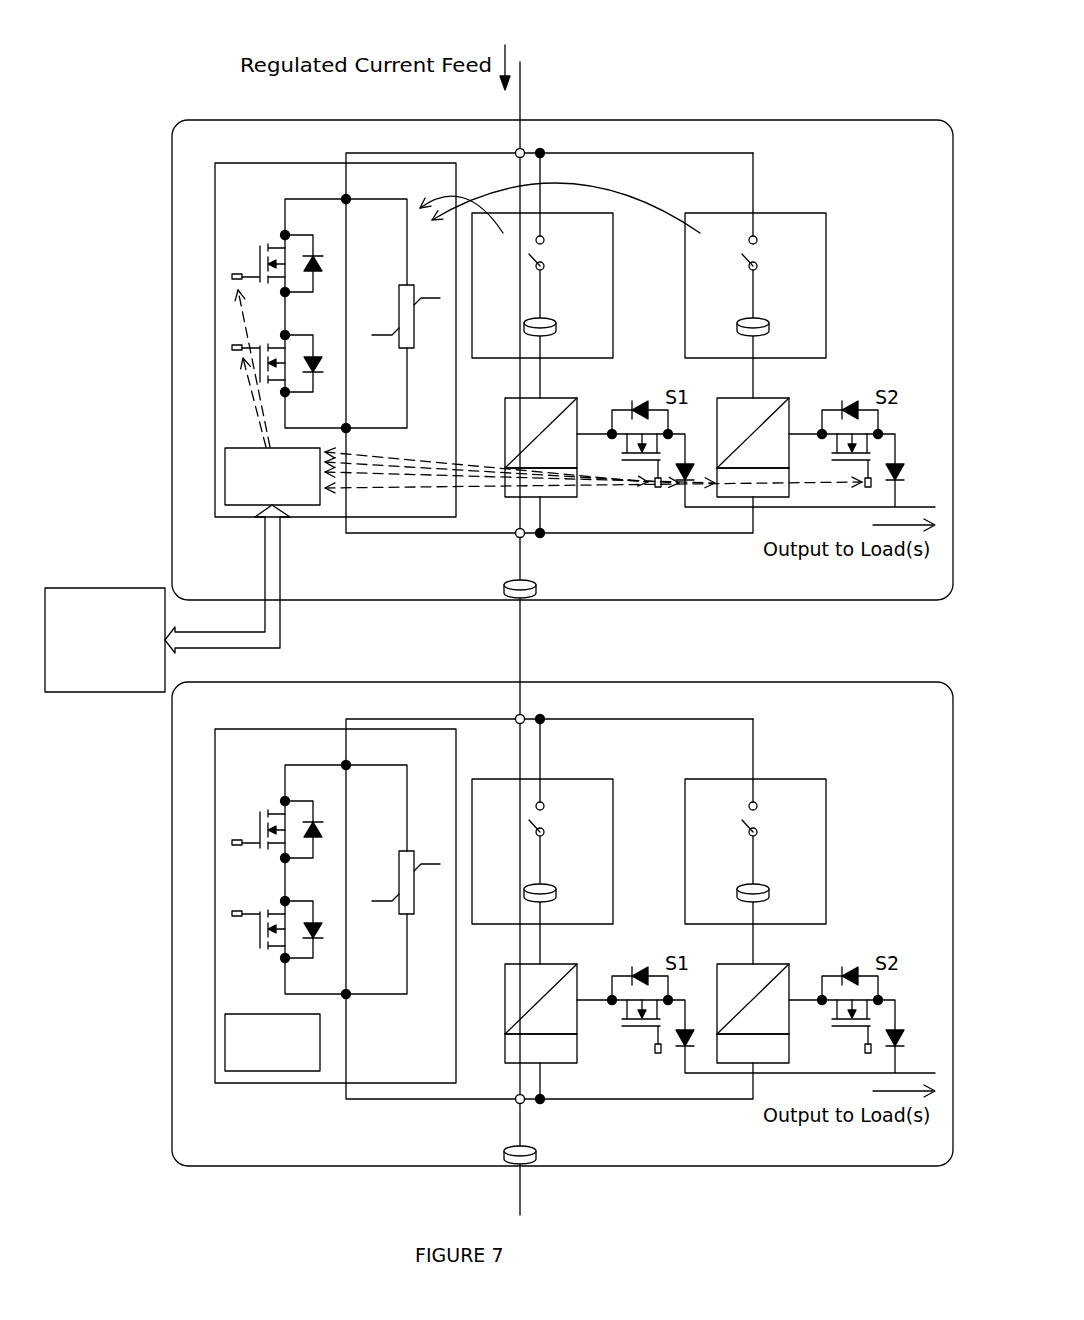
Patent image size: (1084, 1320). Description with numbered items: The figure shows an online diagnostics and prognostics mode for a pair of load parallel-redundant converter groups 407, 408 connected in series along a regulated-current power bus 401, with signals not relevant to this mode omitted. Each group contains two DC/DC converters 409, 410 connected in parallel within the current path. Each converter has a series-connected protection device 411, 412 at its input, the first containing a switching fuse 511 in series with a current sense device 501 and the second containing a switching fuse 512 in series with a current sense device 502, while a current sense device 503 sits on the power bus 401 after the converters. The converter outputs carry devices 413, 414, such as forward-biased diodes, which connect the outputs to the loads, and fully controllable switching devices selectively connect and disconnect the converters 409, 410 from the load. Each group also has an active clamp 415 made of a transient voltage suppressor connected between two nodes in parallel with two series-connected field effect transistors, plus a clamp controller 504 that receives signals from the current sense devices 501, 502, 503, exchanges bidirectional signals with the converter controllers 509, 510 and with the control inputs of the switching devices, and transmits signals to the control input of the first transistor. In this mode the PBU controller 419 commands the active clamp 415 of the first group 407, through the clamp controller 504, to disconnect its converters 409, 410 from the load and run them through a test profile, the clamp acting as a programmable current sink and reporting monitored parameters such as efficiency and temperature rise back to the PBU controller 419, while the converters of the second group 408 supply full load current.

The power bus 401 is at (522, 75).
The parallel-redundant converter group 407 is at (832, 119).
The parallel-redundant converter group 408 is at (832, 681).
The DC/DC converter 409 is at (558, 400).
The DC/DC converter 410 is at (770, 400).
The protection device 411 is at (591, 212).
The protection device 412 is at (804, 212).
The device 413 is at (683, 483).
The device 414 is at (897, 462).
The active clamp 415 is at (298, 162).
The PBU controller 419 is at (103, 587).
The current sense device 501 is at (545, 321).
The current sense device 502 is at (758, 321).
The current sense device 503 is at (531, 579).
The clamp controller 504 is at (272, 448).
The converter controller 509 is at (578, 495).
The converter controller 510 is at (789, 484).
The switching fuse 511 is at (514, 558).
The switching fuse 512 is at (726, 558).